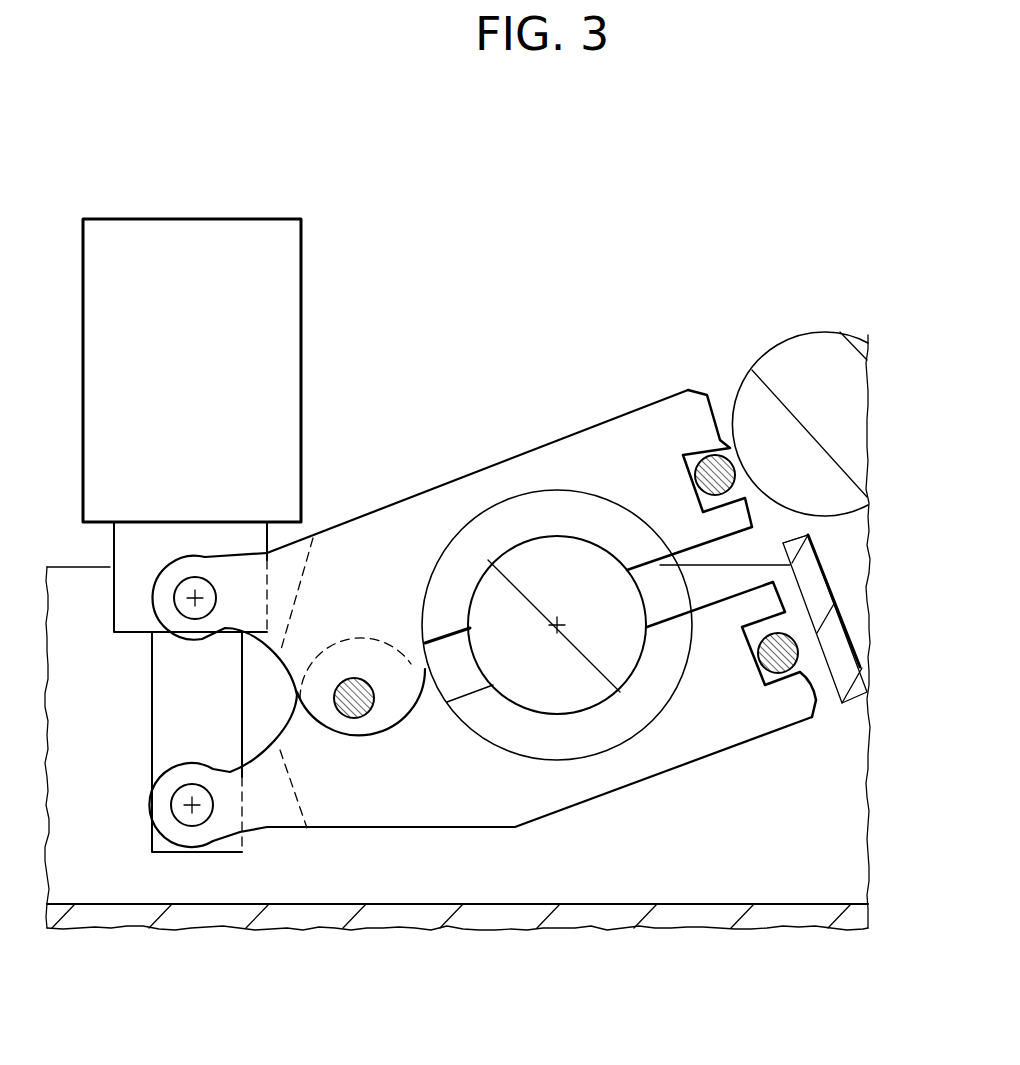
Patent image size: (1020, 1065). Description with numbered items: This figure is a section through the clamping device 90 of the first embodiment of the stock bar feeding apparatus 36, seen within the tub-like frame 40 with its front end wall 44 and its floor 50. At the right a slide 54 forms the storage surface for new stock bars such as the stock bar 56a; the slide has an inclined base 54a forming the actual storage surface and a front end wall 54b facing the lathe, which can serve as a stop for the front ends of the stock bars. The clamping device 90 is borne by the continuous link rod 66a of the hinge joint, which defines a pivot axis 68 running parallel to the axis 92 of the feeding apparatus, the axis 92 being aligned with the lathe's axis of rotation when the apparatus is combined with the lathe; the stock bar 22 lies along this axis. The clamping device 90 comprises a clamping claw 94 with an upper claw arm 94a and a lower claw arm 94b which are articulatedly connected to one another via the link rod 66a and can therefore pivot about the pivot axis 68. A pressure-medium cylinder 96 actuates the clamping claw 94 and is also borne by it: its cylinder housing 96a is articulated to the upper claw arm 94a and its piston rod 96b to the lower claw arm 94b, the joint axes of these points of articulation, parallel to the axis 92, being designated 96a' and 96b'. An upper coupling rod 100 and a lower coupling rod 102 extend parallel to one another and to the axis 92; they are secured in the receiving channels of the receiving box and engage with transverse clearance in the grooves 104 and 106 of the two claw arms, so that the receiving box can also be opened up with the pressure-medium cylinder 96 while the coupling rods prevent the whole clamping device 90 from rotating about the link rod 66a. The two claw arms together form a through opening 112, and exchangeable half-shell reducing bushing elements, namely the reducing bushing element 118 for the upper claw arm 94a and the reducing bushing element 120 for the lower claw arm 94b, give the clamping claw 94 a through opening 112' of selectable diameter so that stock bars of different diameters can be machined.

The stock bar 22 is at (552, 550).
The stock bar feeding apparatus 36 is at (803, 283).
The frame 40 is at (420, 915).
The front end wall 44 is at (90, 890).
The floor 50 is at (803, 895).
The slide 54 is at (853, 707).
The inclined base 54a is at (860, 658).
The front end wall of the slide 54b is at (868, 552).
The new stock bar 56a is at (818, 353).
The link rod 66a is at (354, 720).
The pivot axis 68 is at (354, 698).
The clamping device 90 is at (660, 361).
The axis of the feeding apparatus 92 is at (560, 622).
The clamping claw 94 is at (427, 471).
The upper claw arm 94a is at (632, 427).
The lower claw arm 94b is at (693, 703).
The pressure-medium cylinder 96 is at (171, 216).
The cylinder housing 96a is at (158, 577).
The joint axis of the cylinder housing articulation 96a' is at (137, 613).
The piston rod 96b is at (150, 742).
The joint axis of the piston rod articulation 96b' is at (140, 816).
The upper coupling rod 100 is at (700, 458).
The lower coupling rod 102 is at (760, 672).
The groove 104 is at (730, 447).
The groove 106 is at (813, 663).
The through opening 112 is at (592, 863).
The through opening of selectable diameter 112' is at (523, 857).
The reducing bushing element 118 is at (493, 542).
The reducing bushing element 120 is at (647, 700).